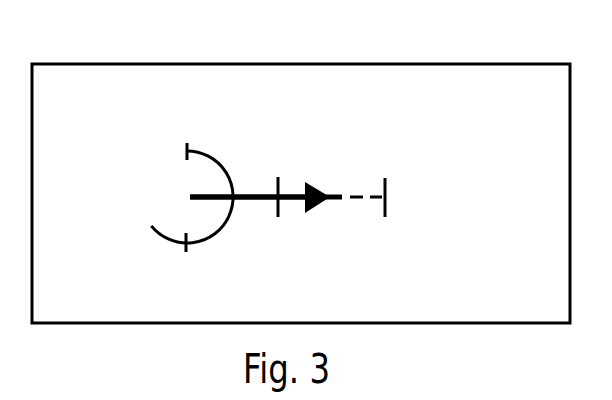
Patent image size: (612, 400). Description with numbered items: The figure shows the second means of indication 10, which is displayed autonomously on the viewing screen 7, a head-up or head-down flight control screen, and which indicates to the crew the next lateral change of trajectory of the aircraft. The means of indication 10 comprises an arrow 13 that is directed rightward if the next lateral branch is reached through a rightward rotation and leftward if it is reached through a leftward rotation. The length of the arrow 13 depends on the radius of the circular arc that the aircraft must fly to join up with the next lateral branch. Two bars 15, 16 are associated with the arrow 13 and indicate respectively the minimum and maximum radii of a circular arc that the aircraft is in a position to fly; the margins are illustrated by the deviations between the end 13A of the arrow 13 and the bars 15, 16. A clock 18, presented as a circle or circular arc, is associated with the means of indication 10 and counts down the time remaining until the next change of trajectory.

The viewing screen 7 is at (462, 324).
The second means of indication 10 is at (255, 157).
The arrow 13 is at (253, 205).
The end of the arrow 13A is at (330, 203).
The bar 15 is at (285, 172).
The bar 16 is at (392, 177).
The clock 18 is at (192, 128).